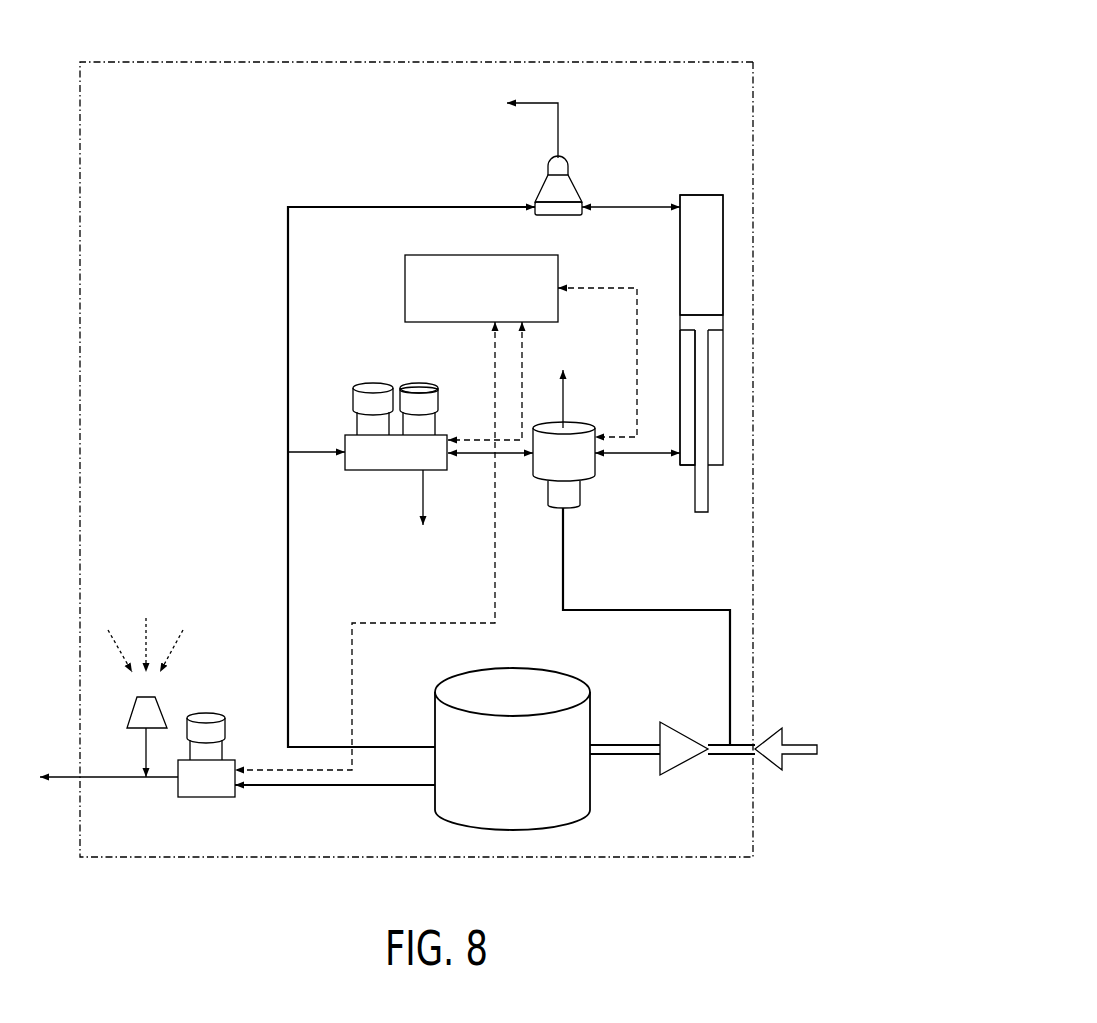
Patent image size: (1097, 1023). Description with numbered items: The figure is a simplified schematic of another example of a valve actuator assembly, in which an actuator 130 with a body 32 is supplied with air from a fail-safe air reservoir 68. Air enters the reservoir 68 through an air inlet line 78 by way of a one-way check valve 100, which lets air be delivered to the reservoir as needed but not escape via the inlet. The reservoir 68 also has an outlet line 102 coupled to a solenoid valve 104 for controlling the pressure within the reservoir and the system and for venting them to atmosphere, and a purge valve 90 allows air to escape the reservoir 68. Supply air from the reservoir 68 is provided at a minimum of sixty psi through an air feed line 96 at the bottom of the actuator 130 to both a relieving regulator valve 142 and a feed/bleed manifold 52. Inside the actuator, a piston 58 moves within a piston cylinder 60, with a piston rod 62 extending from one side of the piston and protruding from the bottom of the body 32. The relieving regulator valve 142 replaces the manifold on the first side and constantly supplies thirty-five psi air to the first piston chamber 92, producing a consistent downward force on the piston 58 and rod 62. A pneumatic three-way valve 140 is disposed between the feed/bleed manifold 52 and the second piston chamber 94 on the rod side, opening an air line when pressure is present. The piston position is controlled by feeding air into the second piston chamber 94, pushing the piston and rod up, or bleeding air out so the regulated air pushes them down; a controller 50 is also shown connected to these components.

The actuator 130 is at (683, 62).
The body 32 is at (757, 455).
The relieving regulator valve 142 is at (574, 190).
The first piston chamber 92 is at (703, 222).
The piston cylinder 60 is at (722, 260).
The piston 58 is at (710, 322).
The piston rod 62 is at (698, 488).
The second piston chamber 94 is at (690, 430).
The controller 50 is at (405, 285).
The feed/bleed manifold 52 is at (380, 475).
The air feed line 96 is at (288, 500).
The pneumatic 3-way valve 140 is at (590, 480).
The fail-safe air reservoir 68 is at (545, 685).
The one-way check valve 100 is at (685, 735).
The air inlet line 78 is at (800, 740).
The purge valve 90 is at (157, 705).
The solenoid valve 104 is at (193, 788).
The outlet line 102 is at (335, 787).